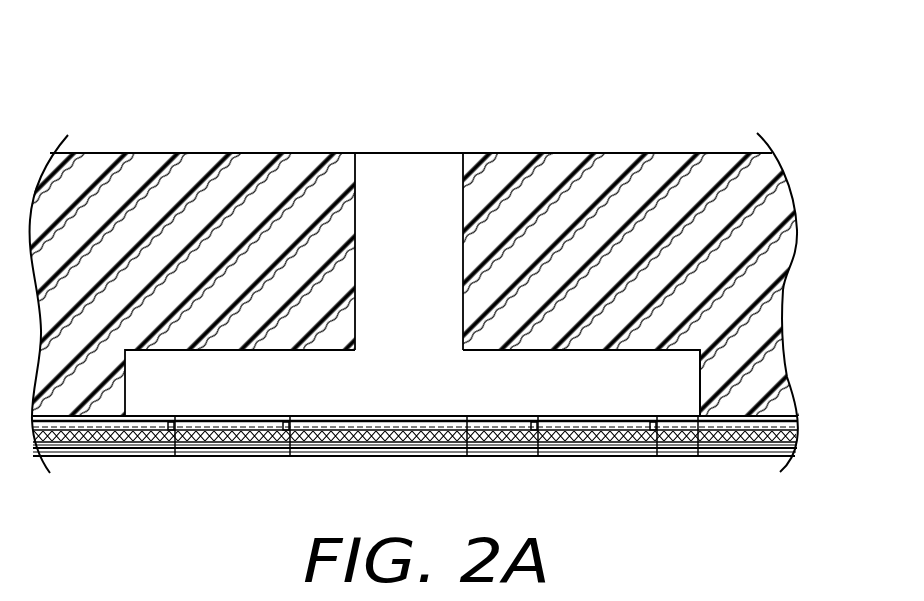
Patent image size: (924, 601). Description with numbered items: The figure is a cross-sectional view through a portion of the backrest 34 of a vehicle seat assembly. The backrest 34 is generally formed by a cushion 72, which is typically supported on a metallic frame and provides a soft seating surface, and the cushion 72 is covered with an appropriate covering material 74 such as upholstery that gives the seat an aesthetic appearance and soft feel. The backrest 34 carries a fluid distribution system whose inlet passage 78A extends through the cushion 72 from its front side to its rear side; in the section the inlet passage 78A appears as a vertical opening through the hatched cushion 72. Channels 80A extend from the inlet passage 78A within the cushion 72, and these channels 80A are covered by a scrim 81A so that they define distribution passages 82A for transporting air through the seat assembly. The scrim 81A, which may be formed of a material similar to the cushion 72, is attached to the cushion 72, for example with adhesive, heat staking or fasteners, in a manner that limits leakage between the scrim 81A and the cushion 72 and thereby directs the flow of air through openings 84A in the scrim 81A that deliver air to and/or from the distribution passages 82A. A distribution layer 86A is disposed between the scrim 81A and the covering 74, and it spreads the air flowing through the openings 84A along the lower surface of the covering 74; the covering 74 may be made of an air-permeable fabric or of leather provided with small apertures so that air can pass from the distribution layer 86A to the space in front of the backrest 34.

The backrest 34 is at (166, 89).
The cushion 72 is at (632, 197).
The covering material 74 is at (728, 455).
The inlet passage 78A is at (480, 195).
The channels 80A is at (701, 348).
The distribution passages 82A is at (258, 396).
The openings 84A is at (655, 457).
The scrim 81A is at (467, 447).
The distribution layer 86A is at (410, 437).